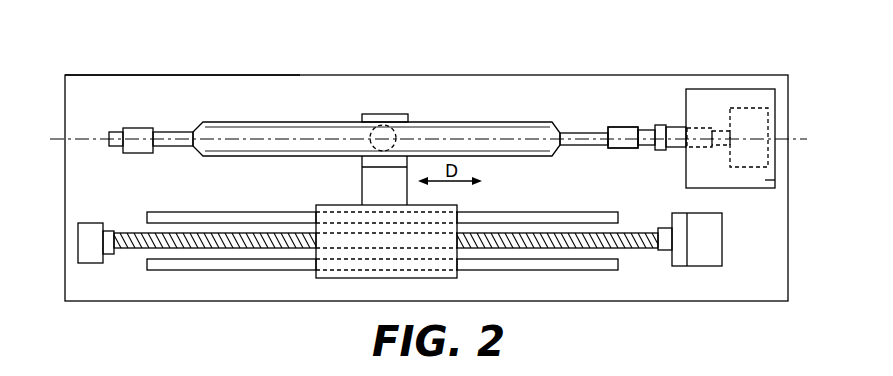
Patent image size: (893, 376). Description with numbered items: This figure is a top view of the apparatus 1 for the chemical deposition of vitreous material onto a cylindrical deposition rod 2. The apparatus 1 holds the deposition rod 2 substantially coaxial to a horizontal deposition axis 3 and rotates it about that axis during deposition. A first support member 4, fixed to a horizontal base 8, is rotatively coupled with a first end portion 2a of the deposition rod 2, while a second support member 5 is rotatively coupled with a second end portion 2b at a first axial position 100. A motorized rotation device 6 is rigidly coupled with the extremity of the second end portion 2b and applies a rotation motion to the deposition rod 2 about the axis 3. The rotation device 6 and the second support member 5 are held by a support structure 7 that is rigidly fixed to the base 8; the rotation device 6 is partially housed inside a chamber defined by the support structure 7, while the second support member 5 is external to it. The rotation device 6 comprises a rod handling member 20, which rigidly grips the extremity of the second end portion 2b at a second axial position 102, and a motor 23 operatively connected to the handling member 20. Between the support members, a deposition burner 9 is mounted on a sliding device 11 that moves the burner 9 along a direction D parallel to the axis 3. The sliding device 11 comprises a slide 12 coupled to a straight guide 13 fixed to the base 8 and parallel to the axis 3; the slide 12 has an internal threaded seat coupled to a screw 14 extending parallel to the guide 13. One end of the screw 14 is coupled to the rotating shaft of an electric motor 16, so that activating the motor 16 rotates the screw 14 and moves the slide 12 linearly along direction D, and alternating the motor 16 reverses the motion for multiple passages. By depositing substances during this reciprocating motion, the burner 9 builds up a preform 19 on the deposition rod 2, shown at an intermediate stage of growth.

The apparatus 1 is at (118, 70).
The horizontal base 8 is at (91, 111).
The horizontal deposition axis 3 is at (109, 141).
The first support member 4 is at (138, 131).
The first end portion 2a is at (168, 137).
The preform 19 is at (507, 125).
The deposition burner 9 is at (395, 127).
The slide 12 is at (453, 208).
The deposition rod 2 is at (575, 132).
The second support member 5 is at (623, 130).
The first axial position 100 is at (625, 112).
The second end portion 2b is at (648, 130).
The rod handling member 20 is at (660, 127).
The second axial position 102 is at (658, 113).
The motorized rotation device 6 is at (716, 99).
The motor 23 is at (768, 151).
The support structure 7 is at (775, 180).
The sliding device 11 is at (302, 186).
The straight guide 13 is at (182, 216).
The screw 14 is at (548, 232).
The electric motor 16 is at (712, 240).